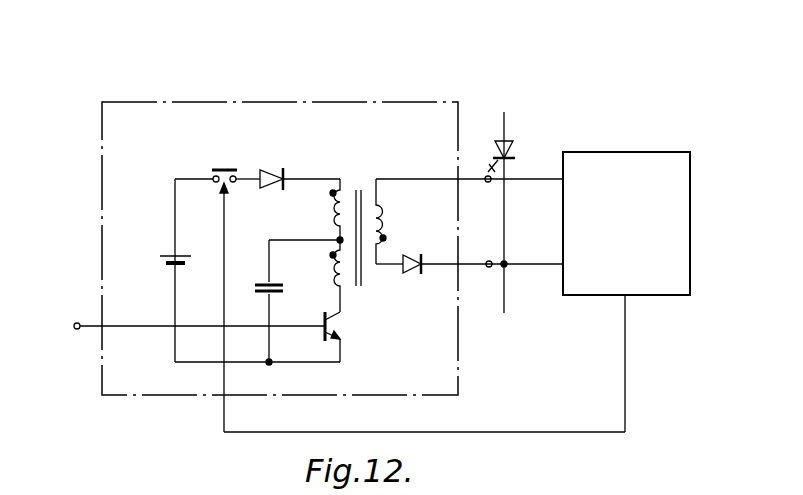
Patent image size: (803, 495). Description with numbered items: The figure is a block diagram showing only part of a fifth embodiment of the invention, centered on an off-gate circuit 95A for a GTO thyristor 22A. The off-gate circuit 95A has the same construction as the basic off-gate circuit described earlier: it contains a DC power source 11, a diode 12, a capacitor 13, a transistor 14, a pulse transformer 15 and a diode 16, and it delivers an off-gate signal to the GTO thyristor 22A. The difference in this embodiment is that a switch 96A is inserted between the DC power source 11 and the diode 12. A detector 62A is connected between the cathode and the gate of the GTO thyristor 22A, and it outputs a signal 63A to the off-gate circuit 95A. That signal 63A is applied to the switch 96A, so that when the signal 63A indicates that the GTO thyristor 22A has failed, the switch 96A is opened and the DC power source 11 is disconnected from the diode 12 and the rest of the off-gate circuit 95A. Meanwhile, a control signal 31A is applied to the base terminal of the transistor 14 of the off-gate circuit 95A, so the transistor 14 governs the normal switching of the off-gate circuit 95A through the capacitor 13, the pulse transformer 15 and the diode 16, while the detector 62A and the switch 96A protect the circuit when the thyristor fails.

The off-gate circuit 95A is at (297, 93).
The switch 96A is at (215, 168).
The DC power source 11 is at (164, 263).
The diode 12 is at (268, 190).
The capacitor 13 is at (261, 283).
The transistor 14 is at (336, 322).
The pulse transformer 15 is at (358, 178).
The diode 16 is at (413, 272).
The GTO thyristor 22A is at (512, 150).
The detector 62A is at (620, 152).
The signal 63A is at (532, 430).
The control signal 31A is at (60, 327).